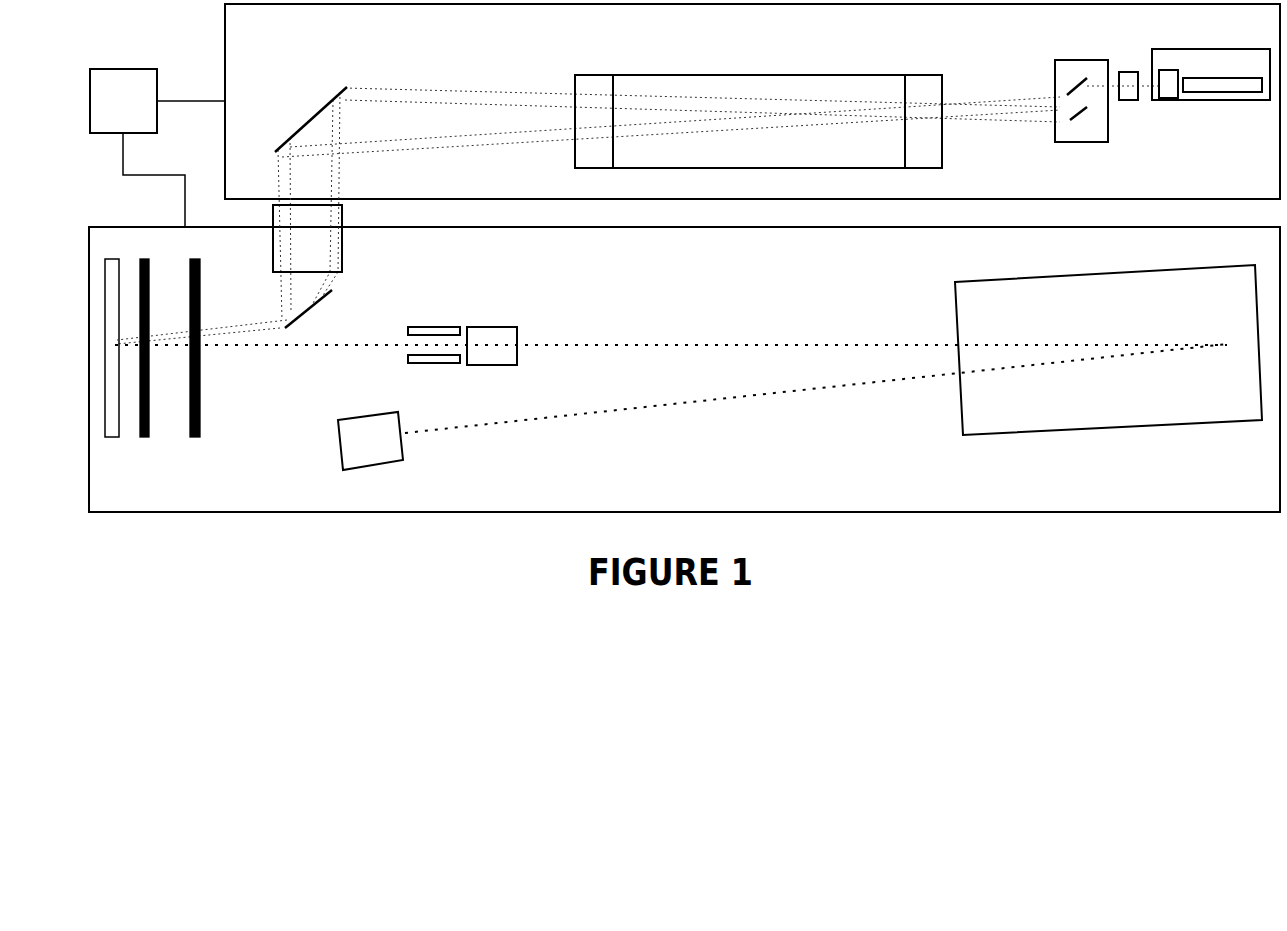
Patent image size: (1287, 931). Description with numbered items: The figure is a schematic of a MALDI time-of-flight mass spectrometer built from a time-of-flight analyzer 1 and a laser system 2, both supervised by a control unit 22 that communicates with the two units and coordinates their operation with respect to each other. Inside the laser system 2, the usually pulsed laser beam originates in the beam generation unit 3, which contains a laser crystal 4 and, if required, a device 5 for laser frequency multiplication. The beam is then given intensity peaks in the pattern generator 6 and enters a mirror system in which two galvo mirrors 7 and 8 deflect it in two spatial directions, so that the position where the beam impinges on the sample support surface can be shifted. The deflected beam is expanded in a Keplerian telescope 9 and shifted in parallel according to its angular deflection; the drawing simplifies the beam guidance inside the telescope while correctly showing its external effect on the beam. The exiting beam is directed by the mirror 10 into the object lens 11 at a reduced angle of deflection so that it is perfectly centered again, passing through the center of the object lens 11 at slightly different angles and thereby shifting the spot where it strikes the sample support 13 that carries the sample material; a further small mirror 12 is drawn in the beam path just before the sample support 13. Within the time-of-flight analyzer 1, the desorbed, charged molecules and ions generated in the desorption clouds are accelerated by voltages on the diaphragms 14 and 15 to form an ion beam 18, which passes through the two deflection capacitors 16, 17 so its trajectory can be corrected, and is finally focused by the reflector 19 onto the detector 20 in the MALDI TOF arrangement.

The time-of-flight analyzer 1 is at (684, 354).
The laser system 2 is at (741, 101).
The beam generation unit 3 is at (1211, 62).
The laser crystal 4 is at (1222, 73).
The device for laser frequency multiplication 5 is at (1168, 101).
The pattern generator 6 is at (1128, 74).
The galvo mirror 7 is at (1081, 101).
The galvo mirror 8 is at (1086, 125).
The Keplerian telescope 9 is at (758, 108).
The mirror 10 is at (311, 119).
The object lens 11 is at (307, 238).
The mirror 12 is at (314, 315).
The sample support 13 is at (109, 365).
The diaphragm 14 is at (144, 335).
The diaphragm 15 is at (196, 365).
The deflection capacitor 16 is at (434, 332).
The deflection capacitor 17 is at (492, 333).
The ion beam 18 is at (671, 331).
The reflector 19 is at (1108, 350).
The detector 20 is at (782, 407).
The control unit 22 is at (157, 148).